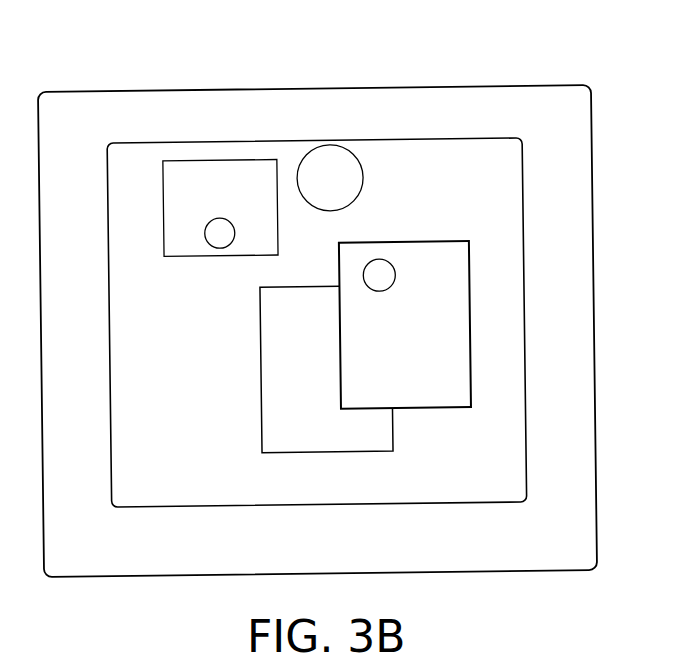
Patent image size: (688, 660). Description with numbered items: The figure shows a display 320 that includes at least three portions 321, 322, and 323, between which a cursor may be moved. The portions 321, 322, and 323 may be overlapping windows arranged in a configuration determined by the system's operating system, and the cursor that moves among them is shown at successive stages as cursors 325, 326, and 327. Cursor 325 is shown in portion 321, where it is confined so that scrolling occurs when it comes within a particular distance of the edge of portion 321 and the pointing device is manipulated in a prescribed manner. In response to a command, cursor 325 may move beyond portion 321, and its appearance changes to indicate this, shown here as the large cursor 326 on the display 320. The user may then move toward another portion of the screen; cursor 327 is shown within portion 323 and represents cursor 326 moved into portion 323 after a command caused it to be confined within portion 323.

The display 320 is at (246, 91).
The portion 321 is at (246, 196).
The portion 322 is at (323, 387).
The portion 323 is at (430, 355).
The cursor 325 is at (220, 233).
The large cursor 326 is at (330, 177).
The cursor 327 is at (379, 275).